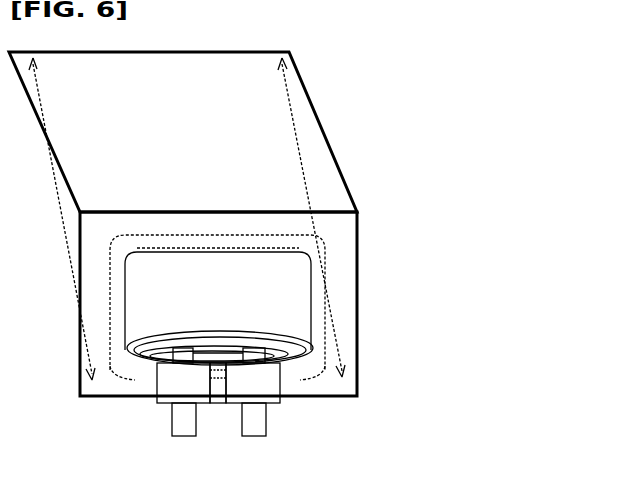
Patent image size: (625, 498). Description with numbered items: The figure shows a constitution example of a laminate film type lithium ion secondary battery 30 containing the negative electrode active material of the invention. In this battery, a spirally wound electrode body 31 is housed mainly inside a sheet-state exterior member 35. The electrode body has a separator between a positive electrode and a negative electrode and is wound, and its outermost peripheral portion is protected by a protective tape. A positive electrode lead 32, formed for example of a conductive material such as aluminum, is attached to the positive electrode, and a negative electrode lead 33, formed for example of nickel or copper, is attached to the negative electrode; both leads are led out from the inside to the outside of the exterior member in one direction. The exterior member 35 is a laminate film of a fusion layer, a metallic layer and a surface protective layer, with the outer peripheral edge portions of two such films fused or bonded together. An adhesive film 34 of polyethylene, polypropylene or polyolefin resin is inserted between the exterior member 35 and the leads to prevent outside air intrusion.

The laminate film type lithium ion secondary battery 30 is at (224, 249).
The spirally wound electrode body 31 is at (280, 294).
The positive electrode lead 32 is at (178, 425).
The negative electrode lead 33 is at (252, 425).
The adhesive film 34 is at (268, 388).
The exterior member 35 is at (232, 137).